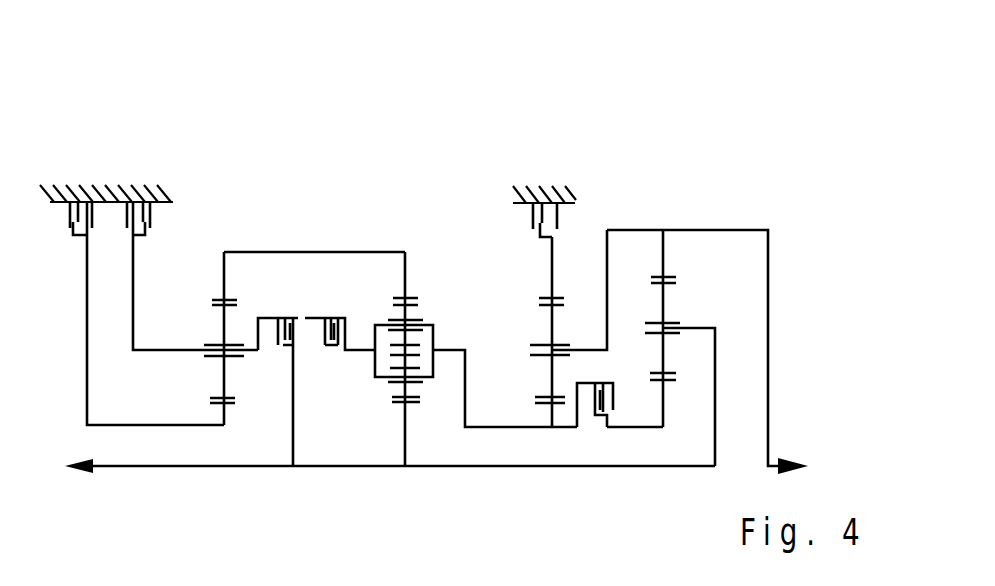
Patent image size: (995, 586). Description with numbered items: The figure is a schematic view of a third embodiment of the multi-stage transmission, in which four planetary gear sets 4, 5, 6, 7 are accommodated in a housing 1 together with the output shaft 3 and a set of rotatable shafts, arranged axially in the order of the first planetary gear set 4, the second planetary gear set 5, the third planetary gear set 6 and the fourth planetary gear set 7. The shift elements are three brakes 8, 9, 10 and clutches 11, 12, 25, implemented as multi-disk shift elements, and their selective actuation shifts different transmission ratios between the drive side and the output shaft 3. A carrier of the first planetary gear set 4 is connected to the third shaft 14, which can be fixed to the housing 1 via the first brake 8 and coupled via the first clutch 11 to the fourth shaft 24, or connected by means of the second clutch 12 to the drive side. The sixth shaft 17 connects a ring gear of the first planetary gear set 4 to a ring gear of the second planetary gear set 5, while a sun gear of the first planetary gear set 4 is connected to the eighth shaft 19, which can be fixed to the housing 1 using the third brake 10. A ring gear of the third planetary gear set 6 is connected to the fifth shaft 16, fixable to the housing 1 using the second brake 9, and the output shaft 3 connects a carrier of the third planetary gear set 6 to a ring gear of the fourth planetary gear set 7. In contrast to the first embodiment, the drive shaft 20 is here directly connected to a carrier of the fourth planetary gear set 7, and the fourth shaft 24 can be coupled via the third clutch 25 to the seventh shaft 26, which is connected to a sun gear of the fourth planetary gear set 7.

The housing 1 is at (143, 193).
The output shaft 3 is at (765, 315).
The first planetary gear set 4 is at (226, 170).
The second planetary gear set 5 is at (407, 170).
The third planetary gear set 6 is at (552, 171).
The fourth planetary gear set 7 is at (664, 170).
The first brake 8 is at (133, 202).
The second brake 9 is at (563, 197).
The third brake 10 is at (87, 202).
The first clutch 11 is at (328, 350).
The second clutch 12 is at (290, 348).
The third shaft 14 is at (132, 318).
The fifth shaft 16 is at (552, 270).
The sixth shaft 17 is at (336, 252).
The eighth shaft 19 is at (86, 355).
The drive shaft 20 is at (188, 467).
The fourth shaft 24 is at (465, 398).
The third clutch 25 is at (600, 398).
The seventh shaft 26 is at (632, 427).